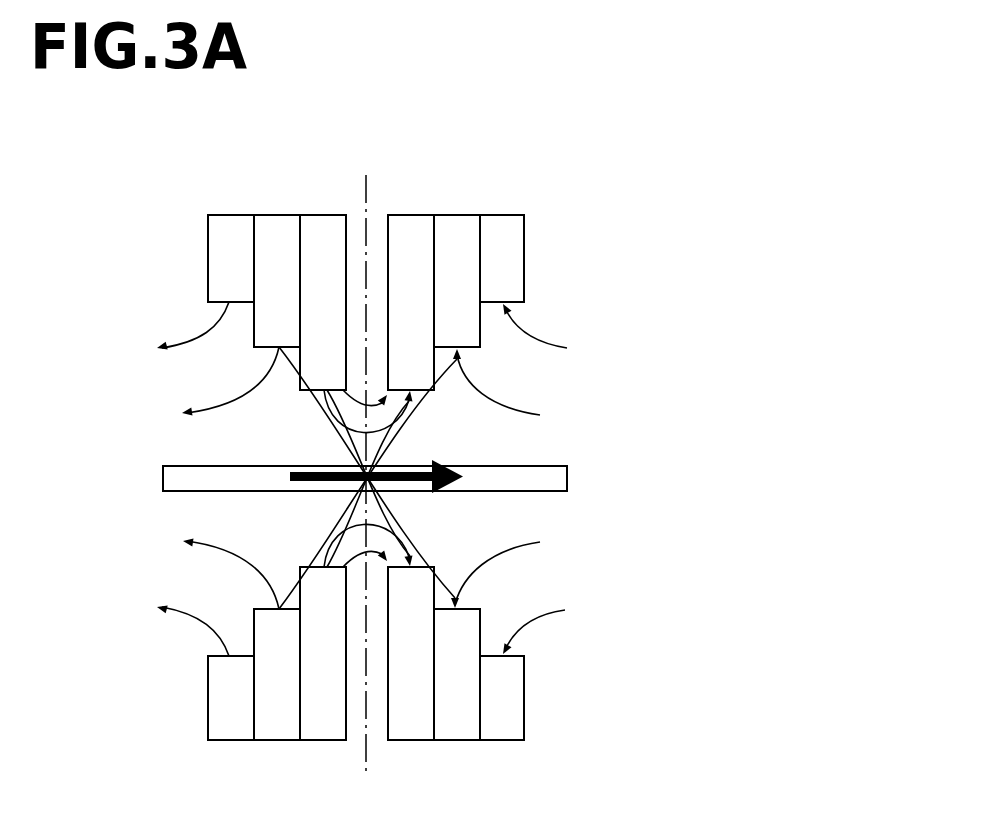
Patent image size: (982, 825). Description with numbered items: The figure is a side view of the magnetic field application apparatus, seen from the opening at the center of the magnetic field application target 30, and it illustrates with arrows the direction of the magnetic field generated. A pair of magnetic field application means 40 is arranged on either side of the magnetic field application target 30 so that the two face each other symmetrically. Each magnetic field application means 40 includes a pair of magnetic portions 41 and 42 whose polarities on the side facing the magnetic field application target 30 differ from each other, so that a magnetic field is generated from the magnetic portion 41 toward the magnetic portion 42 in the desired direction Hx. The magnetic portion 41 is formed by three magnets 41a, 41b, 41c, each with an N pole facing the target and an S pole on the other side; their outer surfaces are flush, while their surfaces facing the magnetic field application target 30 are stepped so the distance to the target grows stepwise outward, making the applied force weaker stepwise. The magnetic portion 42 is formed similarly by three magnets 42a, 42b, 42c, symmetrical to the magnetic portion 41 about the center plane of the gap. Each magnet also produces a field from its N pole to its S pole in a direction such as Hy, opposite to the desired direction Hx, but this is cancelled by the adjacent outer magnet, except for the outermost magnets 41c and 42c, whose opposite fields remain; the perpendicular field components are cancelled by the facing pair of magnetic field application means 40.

The magnetic field application means 40 is at (513, 108).
The magnetic portion 41 is at (335, 150).
The magnetic portion 42 is at (578, 150).
The magnet 41a is at (307, 214).
The magnet 41b is at (264, 214).
The magnet 41c is at (210, 214).
The magnet 42a is at (422, 214).
The magnet 42b is at (470, 214).
The magnet 42c is at (517, 214).
The magnetic field application target 30 is at (567, 484).
The desired direction Hx is at (443, 488).
The direction opposite to the desired direction Hy is at (514, 410).